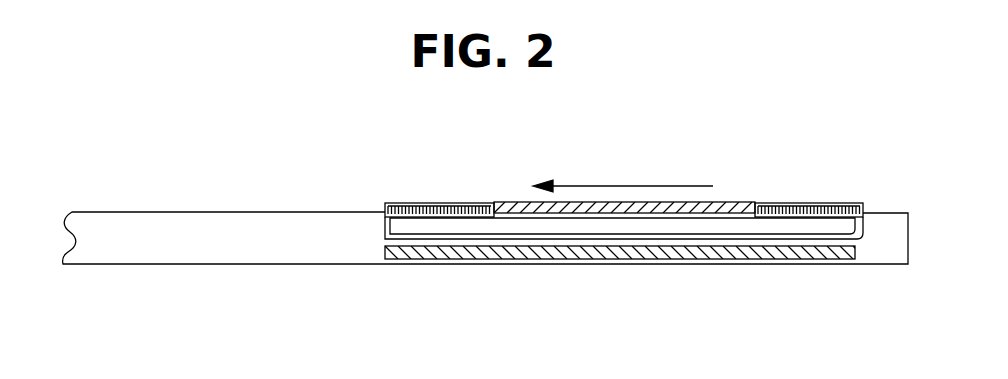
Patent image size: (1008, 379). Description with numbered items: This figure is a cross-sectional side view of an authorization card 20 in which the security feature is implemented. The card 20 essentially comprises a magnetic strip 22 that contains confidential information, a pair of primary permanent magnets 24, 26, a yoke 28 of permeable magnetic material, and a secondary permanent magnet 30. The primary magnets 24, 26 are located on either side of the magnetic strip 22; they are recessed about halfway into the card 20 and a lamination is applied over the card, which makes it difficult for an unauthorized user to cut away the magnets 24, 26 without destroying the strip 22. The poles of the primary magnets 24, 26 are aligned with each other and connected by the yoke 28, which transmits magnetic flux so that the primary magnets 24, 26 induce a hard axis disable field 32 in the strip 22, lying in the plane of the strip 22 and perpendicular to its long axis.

The authorization card 20 is at (195, 205).
The magnetic strip 22 is at (640, 205).
The primary permanent magnet 24 is at (433, 202).
The primary permanent magnet 26 is at (800, 202).
The yoke 28 is at (385, 240).
The secondary permanent magnet 30 is at (645, 256).
The hard axis disable field 32 is at (579, 184).